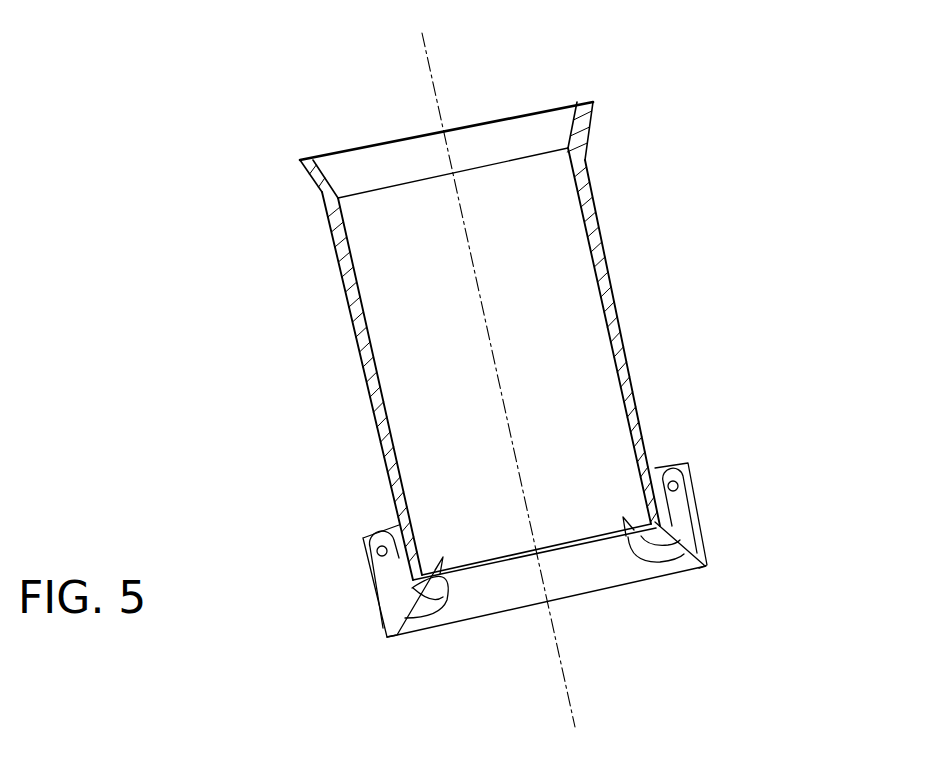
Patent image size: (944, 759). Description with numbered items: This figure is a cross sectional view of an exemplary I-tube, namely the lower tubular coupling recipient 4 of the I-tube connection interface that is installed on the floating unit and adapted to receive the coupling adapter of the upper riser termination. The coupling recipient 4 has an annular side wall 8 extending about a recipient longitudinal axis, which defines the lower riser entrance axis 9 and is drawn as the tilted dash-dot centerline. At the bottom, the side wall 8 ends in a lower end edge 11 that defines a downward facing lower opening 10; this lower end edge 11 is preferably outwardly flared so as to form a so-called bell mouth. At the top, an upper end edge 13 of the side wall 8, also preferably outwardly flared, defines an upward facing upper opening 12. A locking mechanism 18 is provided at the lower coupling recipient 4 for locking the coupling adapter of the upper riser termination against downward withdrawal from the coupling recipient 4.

The lower tubular coupling recipient 4 is at (510, 349).
The annular side wall 8 is at (627, 343).
The lower riser entrance axis 9 is at (527, 492).
The lower opening 10 is at (600, 563).
The lower end edge 11 is at (645, 582).
The upper opening 12 is at (484, 154).
The upper end edge 13 is at (558, 98).
The locking mechanism 18 is at (373, 583).